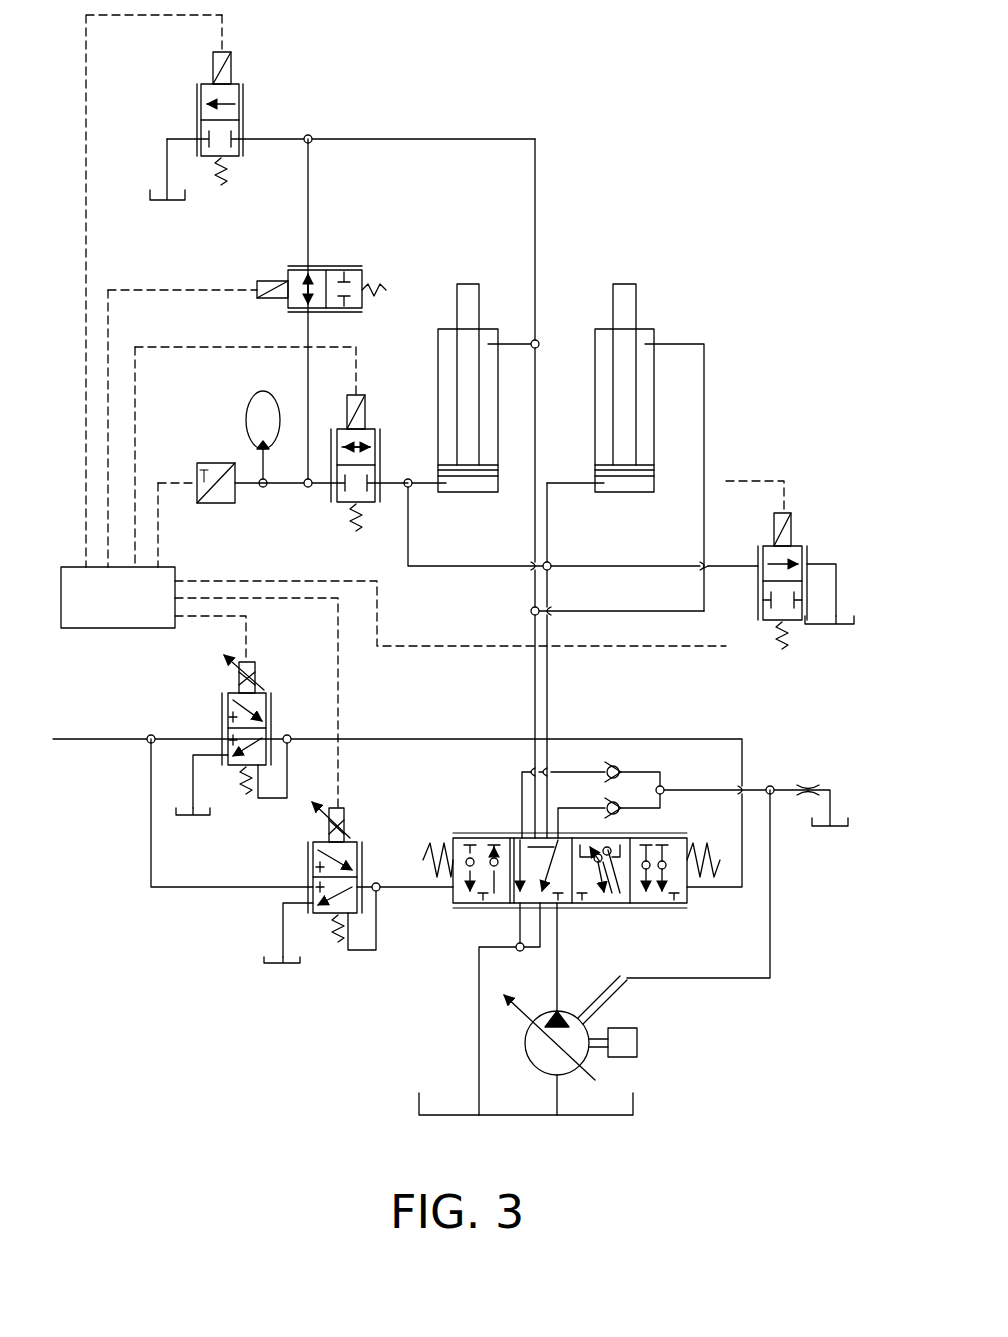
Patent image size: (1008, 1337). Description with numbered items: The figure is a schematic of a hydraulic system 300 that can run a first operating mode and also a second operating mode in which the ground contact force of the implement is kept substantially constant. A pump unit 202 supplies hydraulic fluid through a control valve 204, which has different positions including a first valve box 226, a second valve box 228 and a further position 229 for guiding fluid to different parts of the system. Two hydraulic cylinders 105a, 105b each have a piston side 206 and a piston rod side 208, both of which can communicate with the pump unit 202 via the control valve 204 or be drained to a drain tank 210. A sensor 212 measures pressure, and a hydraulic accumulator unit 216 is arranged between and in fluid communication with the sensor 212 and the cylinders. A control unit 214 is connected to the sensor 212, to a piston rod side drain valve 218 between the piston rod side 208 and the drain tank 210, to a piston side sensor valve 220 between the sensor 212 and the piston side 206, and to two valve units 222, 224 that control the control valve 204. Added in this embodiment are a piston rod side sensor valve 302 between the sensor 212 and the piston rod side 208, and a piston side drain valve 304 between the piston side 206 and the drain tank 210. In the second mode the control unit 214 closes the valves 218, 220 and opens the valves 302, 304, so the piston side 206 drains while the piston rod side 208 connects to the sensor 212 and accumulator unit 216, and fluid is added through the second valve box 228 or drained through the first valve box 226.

The hydraulic system 300 is at (742, 114).
The hydraulic cylinder 105a is at (432, 272).
The hydraulic cylinder 105b is at (690, 320).
The pump unit 202 is at (524, 1035).
The control valve 204 is at (664, 932).
The piston side 206 is at (460, 494).
The piston rod side 208 is at (488, 330).
The drain tank 210 is at (160, 205).
The sensor 212 is at (213, 462).
The control unit 214 is at (80, 630).
The hydraulic accumulator unit 216 is at (248, 412).
The piston rod side drain valve 218 is at (246, 97).
The piston side sensor valve 220 is at (333, 496).
The valve unit 222 is at (225, 710).
The valve unit 224 is at (366, 848).
The first valve box 226 is at (468, 908).
The second valve box 228 is at (596, 908).
The control valve position 229 is at (690, 910).
The piston rod side sensor valve 302 is at (292, 268).
The piston side drain valve 304 is at (808, 548).